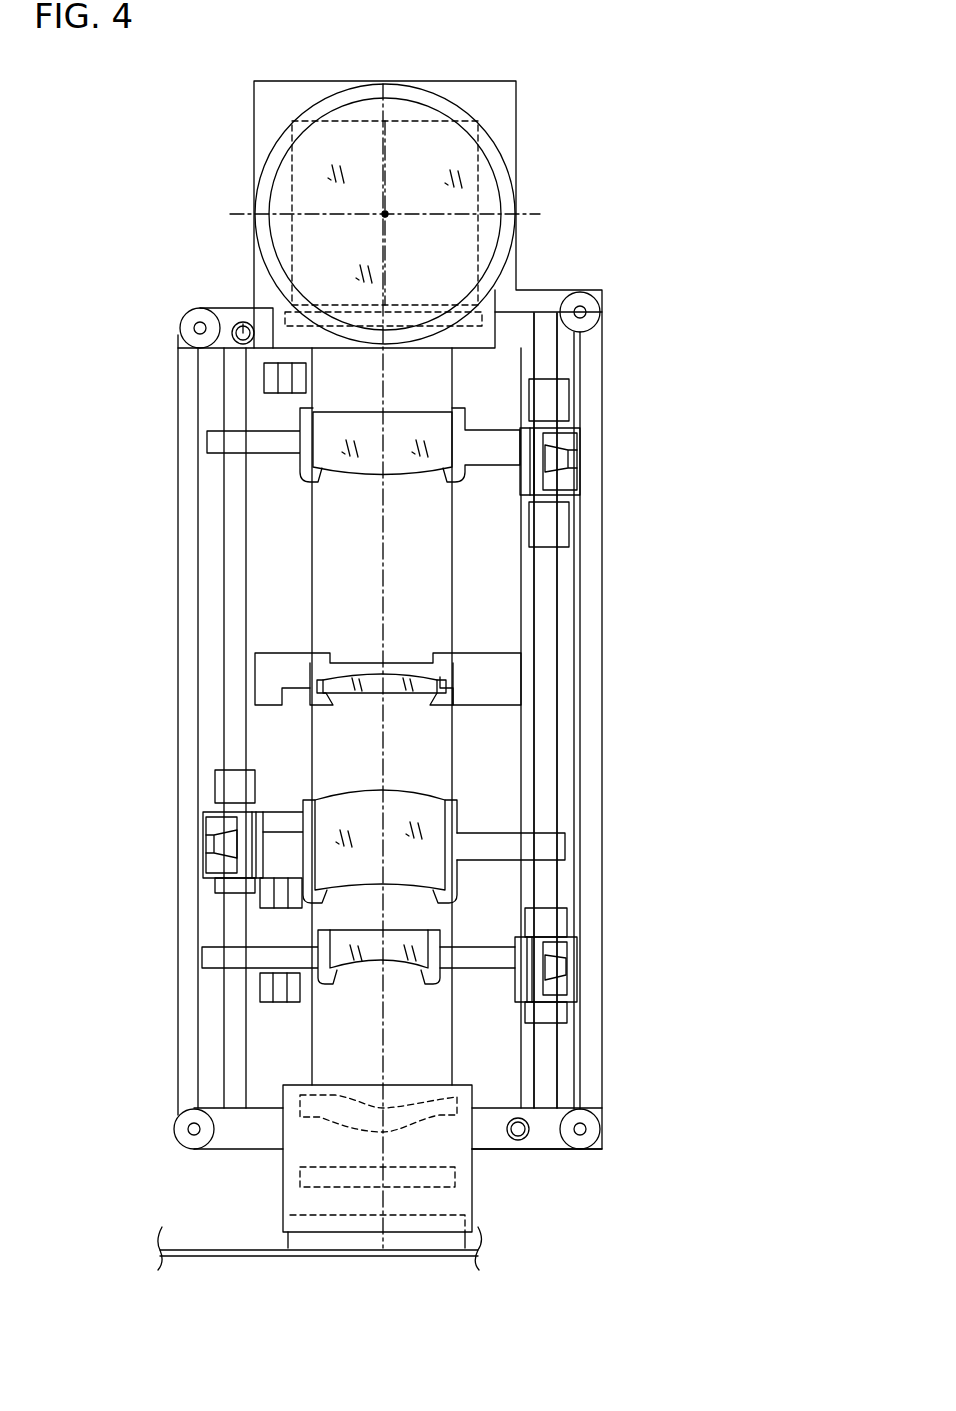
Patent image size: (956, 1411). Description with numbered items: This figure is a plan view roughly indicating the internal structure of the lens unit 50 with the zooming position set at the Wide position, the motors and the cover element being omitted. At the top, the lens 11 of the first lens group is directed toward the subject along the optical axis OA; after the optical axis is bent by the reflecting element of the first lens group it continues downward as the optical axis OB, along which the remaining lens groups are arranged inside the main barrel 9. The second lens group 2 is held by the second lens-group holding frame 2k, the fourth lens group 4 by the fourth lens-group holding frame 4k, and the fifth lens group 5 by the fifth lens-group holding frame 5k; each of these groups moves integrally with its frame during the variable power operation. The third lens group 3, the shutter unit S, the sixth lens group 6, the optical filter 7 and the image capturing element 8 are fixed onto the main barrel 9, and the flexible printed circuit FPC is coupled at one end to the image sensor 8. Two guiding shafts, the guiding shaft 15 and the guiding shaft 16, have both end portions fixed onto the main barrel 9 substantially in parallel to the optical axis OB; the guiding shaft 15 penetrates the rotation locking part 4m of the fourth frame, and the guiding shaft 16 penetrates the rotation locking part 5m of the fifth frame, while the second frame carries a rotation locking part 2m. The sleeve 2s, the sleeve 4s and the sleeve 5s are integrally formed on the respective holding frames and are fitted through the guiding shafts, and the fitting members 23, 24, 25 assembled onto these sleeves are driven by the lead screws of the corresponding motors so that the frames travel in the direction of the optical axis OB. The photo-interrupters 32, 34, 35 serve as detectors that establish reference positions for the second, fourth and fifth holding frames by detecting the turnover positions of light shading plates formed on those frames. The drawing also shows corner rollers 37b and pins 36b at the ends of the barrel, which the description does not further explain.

The lens 11 is at (455, 160).
The optical axis OA is at (387, 216).
The lens unit 50 is at (585, 250).
The pulley / roller 37b is at (200, 328).
The shaft / pin 36b is at (243, 330).
The guiding shaft 16 is at (232, 553).
The guiding shaft 15 is at (550, 610).
The main barrel 9 is at (595, 713).
The second lens group 2 is at (397, 418).
The rotation locking part 2m is at (208, 441).
The second lens-group holding frame 2k is at (458, 484).
The sleeve 2s is at (562, 395).
The fitting member 23 is at (560, 455).
The photo-interrupter 32 is at (270, 380).
The optical axis OB is at (383, 560).
The shutter unit S is at (268, 650).
The third lens group 3 is at (370, 690).
The fourth lens group 4 is at (402, 795).
The fourth lens-group holding frame 4k is at (450, 812).
The rotation locking part 4m is at (560, 848).
The sleeve 4s is at (215, 785).
The fitting member 24 is at (215, 860).
The photo-interrupter 34 is at (270, 900).
The fifth lens group 5 is at (360, 966).
The fifth lens-group holding frame 5k is at (437, 933).
The rotation locking part 5m is at (205, 953).
The sleeve 5s is at (560, 1015).
The fitting member 25 is at (570, 955).
The photo-interrupter 35 is at (268, 985).
The sixth lens group 6 is at (432, 1118).
The optical filter 7 is at (450, 1178).
The image capturing element 8 is at (418, 1245).
The flexible printed circuit FPC is at (235, 1258).